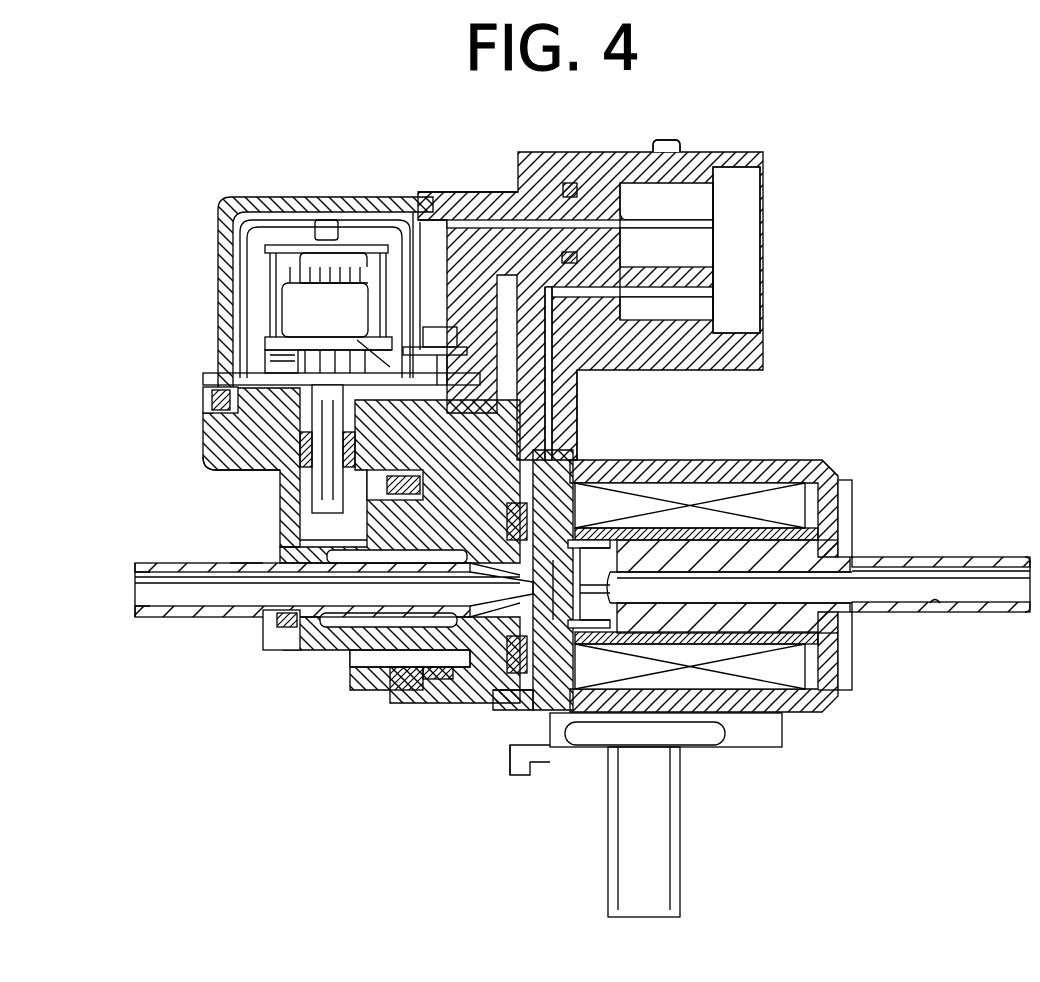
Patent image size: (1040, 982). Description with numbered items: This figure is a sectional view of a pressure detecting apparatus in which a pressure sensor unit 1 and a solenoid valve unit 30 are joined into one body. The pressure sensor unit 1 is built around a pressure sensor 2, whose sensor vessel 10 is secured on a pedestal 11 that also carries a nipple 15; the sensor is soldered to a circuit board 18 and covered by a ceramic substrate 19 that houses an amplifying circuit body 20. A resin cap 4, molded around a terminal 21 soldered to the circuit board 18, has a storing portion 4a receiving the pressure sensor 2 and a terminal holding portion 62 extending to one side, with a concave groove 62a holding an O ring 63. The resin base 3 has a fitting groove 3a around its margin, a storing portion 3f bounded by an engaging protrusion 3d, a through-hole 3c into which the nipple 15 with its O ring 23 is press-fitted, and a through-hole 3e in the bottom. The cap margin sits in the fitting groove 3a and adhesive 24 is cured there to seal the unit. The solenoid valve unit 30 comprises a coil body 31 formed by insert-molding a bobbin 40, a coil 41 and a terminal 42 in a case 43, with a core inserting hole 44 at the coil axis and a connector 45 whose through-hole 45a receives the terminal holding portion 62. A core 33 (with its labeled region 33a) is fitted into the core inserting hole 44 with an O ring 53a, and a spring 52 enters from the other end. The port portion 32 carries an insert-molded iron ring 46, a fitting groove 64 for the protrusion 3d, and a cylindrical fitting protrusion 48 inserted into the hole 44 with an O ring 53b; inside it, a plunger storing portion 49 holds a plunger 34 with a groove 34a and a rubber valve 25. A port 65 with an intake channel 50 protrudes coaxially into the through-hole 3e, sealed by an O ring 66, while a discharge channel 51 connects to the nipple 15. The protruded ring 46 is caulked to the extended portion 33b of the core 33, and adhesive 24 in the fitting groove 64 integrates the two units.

The pressure sensor unit 1 is at (220, 173).
The pressure sensor 2 is at (262, 294).
The base 3 is at (260, 484).
The fitting groove 3a is at (205, 400).
The through-hole 3c is at (236, 437).
The engaging protrusion 3d is at (362, 690).
The through-hole 3e is at (245, 600).
The storing portion 3f is at (280, 652).
The cap 4 is at (250, 194).
The storing portion 4a is at (410, 215).
The sensor vessel 10 is at (293, 287).
The pedestal 11 is at (265, 343).
The nipple 15 is at (367, 487).
The circuit board 18 is at (232, 376).
The ceramic substrate 19 is at (373, 240).
The amplifying circuit body 20 is at (312, 258).
The terminal 21 is at (713, 212).
The O ring 23 is at (312, 470).
The adhesive 24 is at (212, 392).
The rubber valve 25 is at (555, 712).
The solenoid valve unit 30 is at (320, 712).
The coil body 31 is at (814, 458).
The port portion 32 is at (470, 714).
The core 33 is at (980, 555).
The shaft bore 33a is at (936, 605).
The extended portion 33b is at (745, 750).
The plunger 34 is at (318, 662).
The groove 34a is at (603, 530).
The bobbin 40 is at (834, 475).
The coil 41 is at (695, 500).
The terminal 42 is at (713, 288).
The case 43 is at (824, 704).
The core inserting hole 44 is at (782, 722).
The connector 45 is at (745, 155).
The through-hole 45a is at (668, 148).
The iron ring 46 is at (565, 395).
The cylindrical fitting protrusion 48 is at (647, 543).
The plunger storing portion 49 is at (468, 710).
The intake channel 50 is at (205, 592).
The discharge channel 51 is at (300, 470).
The spring 52 is at (590, 747).
The O ring 53a is at (852, 660).
The O ring 53b is at (505, 722).
The terminal holding portion 62 is at (522, 175).
The concave groove 62a is at (565, 183).
The O ring 63 is at (577, 255).
The fitting groove 64 is at (430, 680).
The port 65 is at (140, 618).
The O ring 66 is at (340, 548).